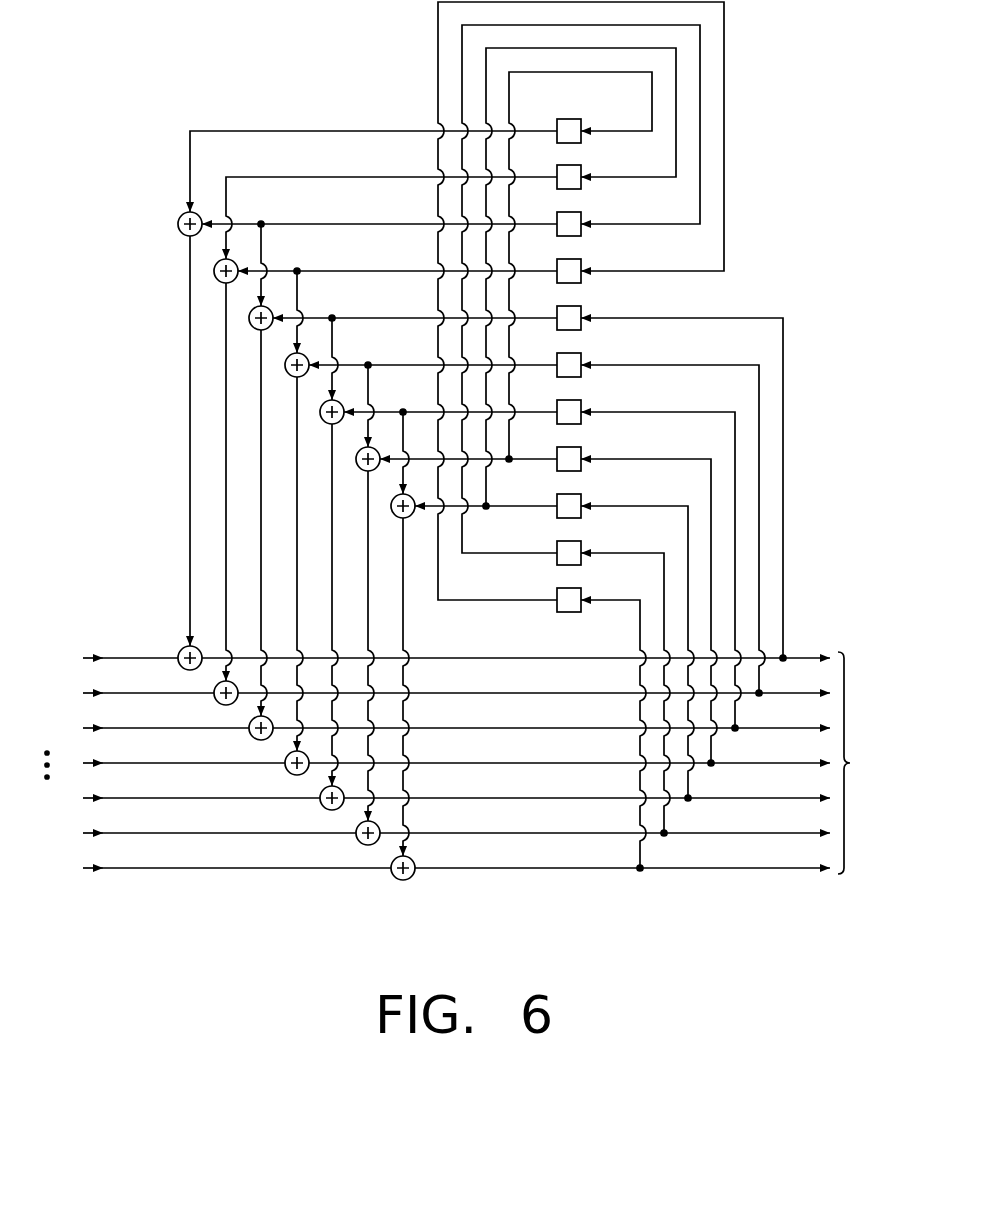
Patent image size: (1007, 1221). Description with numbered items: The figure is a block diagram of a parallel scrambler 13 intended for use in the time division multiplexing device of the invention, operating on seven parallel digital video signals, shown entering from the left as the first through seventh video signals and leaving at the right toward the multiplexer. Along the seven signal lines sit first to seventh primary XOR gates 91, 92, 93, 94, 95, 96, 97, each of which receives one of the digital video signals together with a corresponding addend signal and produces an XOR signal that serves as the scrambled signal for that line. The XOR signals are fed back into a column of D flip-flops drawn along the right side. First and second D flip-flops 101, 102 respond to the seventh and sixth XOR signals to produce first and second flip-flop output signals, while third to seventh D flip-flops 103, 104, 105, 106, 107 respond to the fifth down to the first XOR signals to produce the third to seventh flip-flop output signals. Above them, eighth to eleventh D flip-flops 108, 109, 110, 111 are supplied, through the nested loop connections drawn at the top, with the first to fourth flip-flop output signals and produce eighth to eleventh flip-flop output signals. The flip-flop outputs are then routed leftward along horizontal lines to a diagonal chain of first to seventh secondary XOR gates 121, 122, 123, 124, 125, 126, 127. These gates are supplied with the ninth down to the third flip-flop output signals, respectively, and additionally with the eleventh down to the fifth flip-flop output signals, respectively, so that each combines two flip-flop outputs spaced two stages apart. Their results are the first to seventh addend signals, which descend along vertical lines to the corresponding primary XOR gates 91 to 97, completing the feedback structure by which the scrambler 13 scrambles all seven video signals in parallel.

The parallel scrambler 13 is at (468, 481).
The first primary XOR gate 91 is at (180, 649).
The second primary XOR gate 92 is at (216, 684).
The third primary XOR gate 93 is at (251, 719).
The fourth primary XOR gate 94 is at (287, 754).
The fifth primary XOR gate 95 is at (322, 789).
The sixth primary XOR gate 96 is at (358, 824).
The seventh primary XOR gate 97 is at (393, 859).
The first D flip-flop 101 is at (582, 610).
The second D flip-flop 102 is at (582, 563).
The third D flip-flop 103 is at (582, 516).
The fourth D flip-flop 104 is at (582, 469).
The fifth D flip-flop 105 is at (582, 422).
The sixth D flip-flop 106 is at (582, 375).
The seventh D flip-flop 107 is at (582, 328).
The eighth D flip-flop 108 is at (582, 281).
The ninth D flip-flop 109 is at (582, 234).
The tenth D flip-flop 110 is at (582, 187).
The eleventh D flip-flop 111 is at (582, 141).
The first secondary XOR gate 121 is at (182, 235).
The second secondary XOR gate 122 is at (218, 282).
The third secondary XOR gate 123 is at (253, 329).
The fourth secondary XOR gate 124 is at (289, 376).
The fifth secondary XOR gate 125 is at (324, 423).
The sixth secondary XOR gate 126 is at (360, 470).
The seventh secondary XOR gate 127 is at (395, 517).